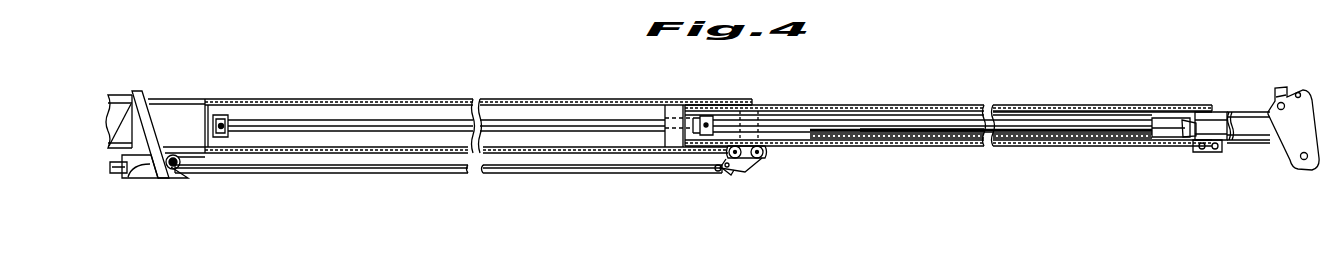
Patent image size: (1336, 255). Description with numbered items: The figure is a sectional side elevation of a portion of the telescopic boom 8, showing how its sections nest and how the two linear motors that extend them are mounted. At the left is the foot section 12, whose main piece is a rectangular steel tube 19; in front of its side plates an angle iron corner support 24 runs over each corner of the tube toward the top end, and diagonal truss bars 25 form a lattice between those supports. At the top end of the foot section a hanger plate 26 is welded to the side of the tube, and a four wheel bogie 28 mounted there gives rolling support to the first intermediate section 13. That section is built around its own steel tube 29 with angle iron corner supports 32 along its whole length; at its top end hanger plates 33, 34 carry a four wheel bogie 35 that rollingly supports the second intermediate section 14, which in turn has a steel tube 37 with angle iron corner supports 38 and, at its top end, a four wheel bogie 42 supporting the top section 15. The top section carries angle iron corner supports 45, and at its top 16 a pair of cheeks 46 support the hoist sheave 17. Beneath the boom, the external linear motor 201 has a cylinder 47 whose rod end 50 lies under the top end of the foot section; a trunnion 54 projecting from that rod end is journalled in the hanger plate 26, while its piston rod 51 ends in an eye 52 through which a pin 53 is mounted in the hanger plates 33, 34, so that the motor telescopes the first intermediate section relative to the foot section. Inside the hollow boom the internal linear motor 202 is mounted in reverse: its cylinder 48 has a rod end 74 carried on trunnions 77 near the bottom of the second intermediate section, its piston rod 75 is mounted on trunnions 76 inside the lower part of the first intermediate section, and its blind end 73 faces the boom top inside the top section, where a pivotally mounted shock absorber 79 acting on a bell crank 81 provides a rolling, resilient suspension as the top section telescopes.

The boom 8 is at (1292, 164).
The foot section 12 is at (122, 88).
The first intermediate section 13 is at (655, 93).
The second intermediate section 14 is at (951, 100).
The top section 15 is at (1236, 150).
The top of the top section 16 is at (1317, 108).
The hoist sheave 17 is at (1274, 88).
The steel tube 19 is at (163, 118).
The angle iron corner support 24 is at (140, 95).
The diagonal truss bar 25 is at (121, 125).
The hanger plate 26 is at (196, 112).
The four wheel bogie 28 is at (181, 165).
The steel tube 29 is at (218, 113).
The angle iron corner support 32 is at (184, 132).
The hanger plate 33 is at (745, 165).
The hanger plate 34 is at (765, 160).
The four wheel bogie 35 is at (770, 150).
The steel tube 37 is at (794, 104).
The angle iron corner support 38 is at (841, 105).
The four wheel bogie 42 is at (1198, 148).
The angle iron corner support 45 is at (1247, 113).
The cheek 46 is at (1306, 138).
The cylinder 47 is at (119, 176).
The cylinder 48 is at (1043, 132).
The rod end 50 is at (178, 170).
The piston rod 51 is at (334, 175).
The eye 52 is at (717, 173).
The pin 53 is at (729, 175).
The trunnion 54 is at (140, 178).
The blind end 73 is at (1157, 117).
The rod end 74 is at (704, 114).
The piston rod 75 is at (585, 122).
The trunnion 76 is at (245, 124).
The trunnion 77 is at (726, 116).
The shock absorber 79 is at (1187, 118).
The bell crank 81 is at (1213, 108).
The external linear motor 201 is at (281, 178).
The internal linear motor 202 is at (915, 128).